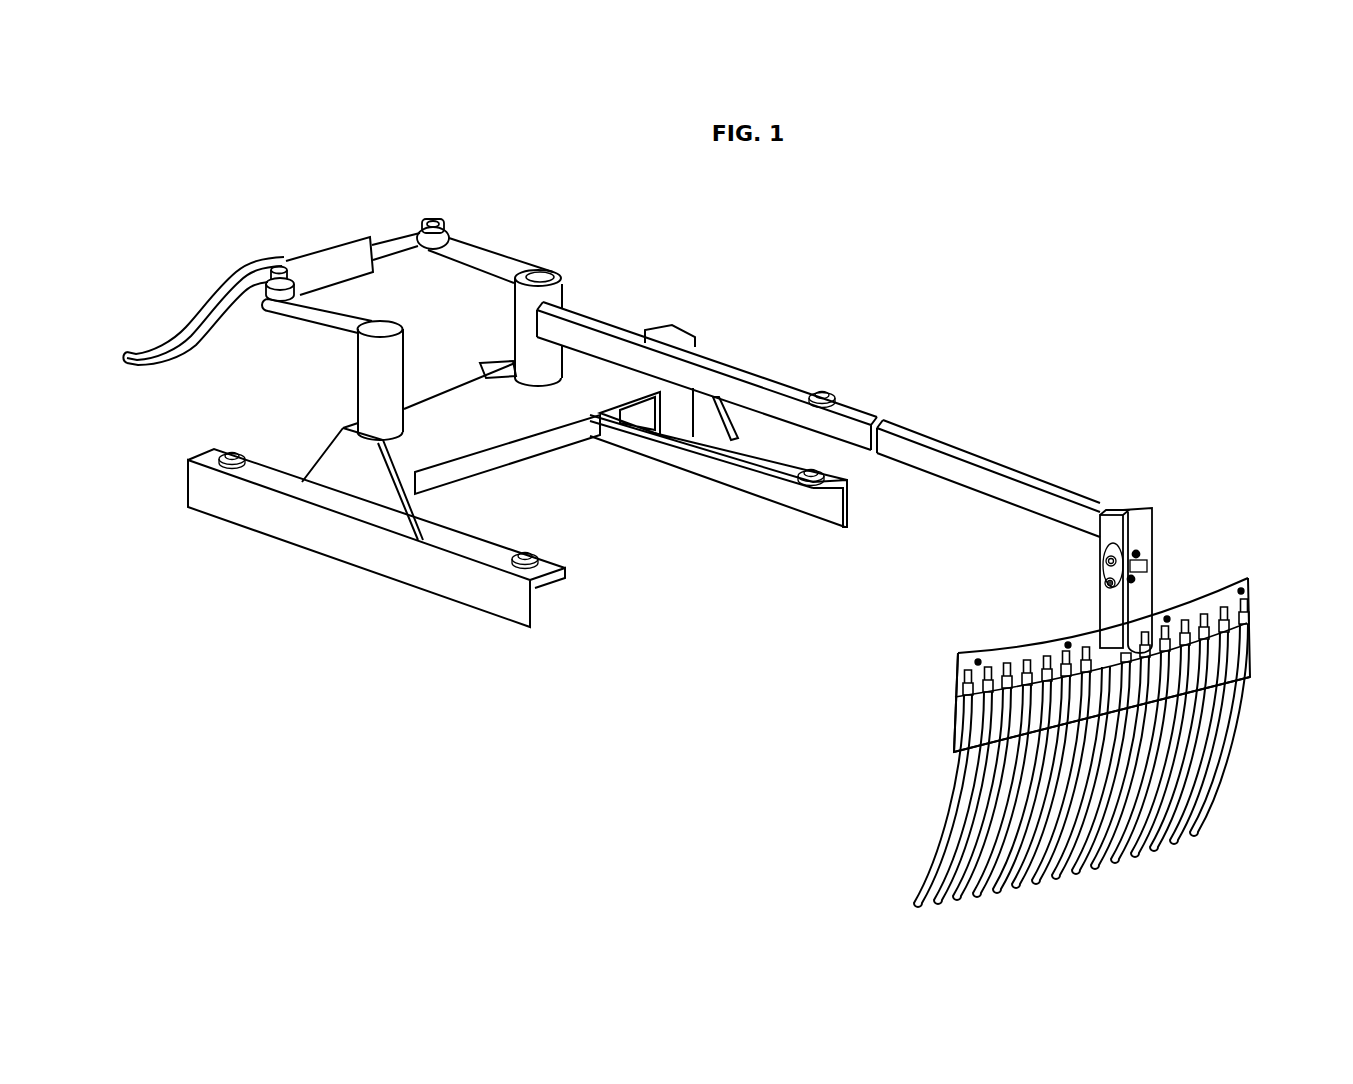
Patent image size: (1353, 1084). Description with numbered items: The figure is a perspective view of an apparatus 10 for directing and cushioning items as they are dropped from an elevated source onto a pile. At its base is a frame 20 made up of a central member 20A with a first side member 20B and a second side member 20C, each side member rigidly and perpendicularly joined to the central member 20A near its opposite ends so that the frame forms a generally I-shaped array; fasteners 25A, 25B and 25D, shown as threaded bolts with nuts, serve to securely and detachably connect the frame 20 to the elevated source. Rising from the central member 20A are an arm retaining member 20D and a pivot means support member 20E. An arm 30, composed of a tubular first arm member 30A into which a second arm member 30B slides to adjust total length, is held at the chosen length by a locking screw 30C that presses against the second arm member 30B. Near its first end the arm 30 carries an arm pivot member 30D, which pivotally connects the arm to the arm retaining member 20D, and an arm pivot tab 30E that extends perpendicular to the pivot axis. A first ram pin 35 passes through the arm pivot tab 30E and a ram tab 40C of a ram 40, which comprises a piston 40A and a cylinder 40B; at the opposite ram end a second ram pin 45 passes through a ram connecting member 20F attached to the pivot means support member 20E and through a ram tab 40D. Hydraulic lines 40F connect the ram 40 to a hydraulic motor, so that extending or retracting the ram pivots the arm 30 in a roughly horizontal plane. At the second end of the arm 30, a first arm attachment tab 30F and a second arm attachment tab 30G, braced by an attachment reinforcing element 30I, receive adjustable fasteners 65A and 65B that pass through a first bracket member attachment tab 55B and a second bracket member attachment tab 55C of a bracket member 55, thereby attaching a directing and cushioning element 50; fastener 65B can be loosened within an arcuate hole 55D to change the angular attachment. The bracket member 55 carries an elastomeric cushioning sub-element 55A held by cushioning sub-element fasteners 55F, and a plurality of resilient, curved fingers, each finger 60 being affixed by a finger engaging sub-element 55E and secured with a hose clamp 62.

The apparatus 10 is at (720, 322).
The frame 20 is at (317, 488).
The central member 20A is at (497, 435).
The first side member 20B is at (753, 477).
The second side member 20C is at (463, 587).
The arm retaining member 20D is at (542, 272).
The pivot means support member 20E is at (373, 390).
The ram connecting member 20F is at (340, 310).
The fastener 25A is at (227, 455).
The fastener 25B is at (527, 556).
The fastener 25D is at (813, 465).
The arm 30 is at (883, 427).
The first arm member 30A is at (760, 377).
The second arm member 30B is at (1020, 470).
The locking screw 30C is at (822, 392).
The arm pivot member 30D is at (553, 292).
The arm pivot tab 30E is at (480, 255).
The first arm attachment tab 30F is at (1107, 523).
The second arm attachment tab 30G is at (1147, 525).
The attachment reinforcing element 30I is at (1158, 590).
The first ram pin 35 is at (433, 216).
The ram 40 is at (373, 250).
The piston 40A is at (397, 240).
The cylinder 40B is at (330, 258).
The ram tab 40C is at (452, 240).
The ram tab 40D is at (263, 293).
The hydraulic lines 40F is at (175, 332).
The second ram pin 45 is at (257, 258).
The directing and cushioning element 50 is at (1162, 610).
The bracket member 55 is at (1244, 595).
The elastomeric cushioning sub-element 55A is at (955, 752).
The first bracket member attachment tab 55B is at (1107, 610).
The second bracket member attachment tab 55C is at (1162, 603).
The arcuate hole 55D is at (1107, 580).
The finger engaging sub-element 55E is at (958, 677).
The cushioning sub-element fasteners 55F is at (980, 662).
The finger 60 is at (927, 870).
The hose clamp 62 is at (955, 697).
The adjustable fastener 65A is at (1107, 557).
The adjustable fastener 65B is at (1107, 582).